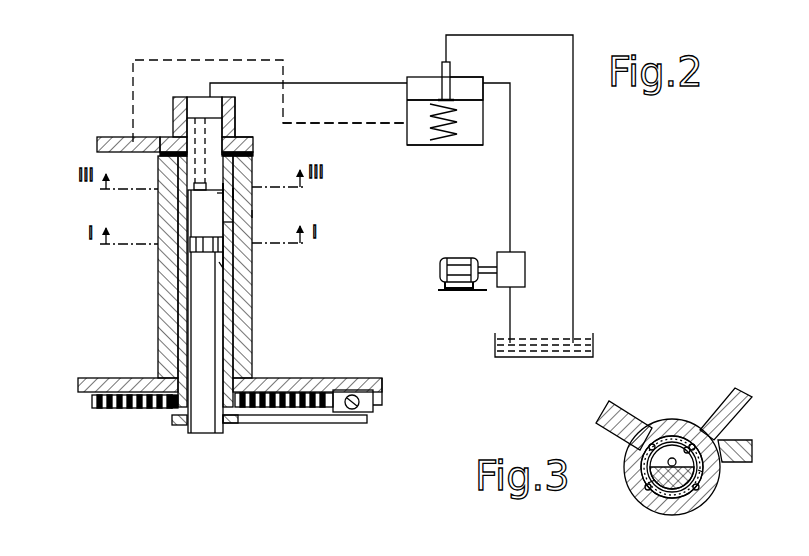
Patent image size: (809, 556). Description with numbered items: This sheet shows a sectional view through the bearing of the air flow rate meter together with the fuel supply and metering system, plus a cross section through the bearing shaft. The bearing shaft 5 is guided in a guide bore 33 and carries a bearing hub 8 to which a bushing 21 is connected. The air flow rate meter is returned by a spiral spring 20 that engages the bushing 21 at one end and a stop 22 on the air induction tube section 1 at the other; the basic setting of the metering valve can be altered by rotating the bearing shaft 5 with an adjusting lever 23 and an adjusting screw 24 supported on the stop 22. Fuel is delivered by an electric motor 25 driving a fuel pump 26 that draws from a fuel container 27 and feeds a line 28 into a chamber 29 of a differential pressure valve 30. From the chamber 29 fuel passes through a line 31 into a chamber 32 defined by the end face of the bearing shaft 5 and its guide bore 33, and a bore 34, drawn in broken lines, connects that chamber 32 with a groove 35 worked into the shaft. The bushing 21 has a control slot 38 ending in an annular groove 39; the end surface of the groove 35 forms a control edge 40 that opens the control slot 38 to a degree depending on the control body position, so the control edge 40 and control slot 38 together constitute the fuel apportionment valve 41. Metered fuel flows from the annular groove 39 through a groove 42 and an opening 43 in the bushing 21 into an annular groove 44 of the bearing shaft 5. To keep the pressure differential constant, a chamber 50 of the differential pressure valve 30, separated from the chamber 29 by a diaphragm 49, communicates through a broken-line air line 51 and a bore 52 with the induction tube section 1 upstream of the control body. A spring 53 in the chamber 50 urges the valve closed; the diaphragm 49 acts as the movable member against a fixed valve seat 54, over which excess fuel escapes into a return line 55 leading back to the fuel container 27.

In FIG. 2, the air induction tube section 1 is at (98, 390).
In FIG. 2, the bearing shaft 5 is at (209, 348).
In FIG. 3, the bearing shaft 5 is at (657, 502).
In FIG. 2, the bearing hub 8 is at (170, 338).
In FIG. 3, the bearing hub 8 is at (675, 503).
In FIG. 2, the spiral spring 20 is at (128, 408).
In FIG. 2, the bushing 21 is at (178, 273).
In FIG. 3, the bushing 21 is at (689, 444).
In FIG. 2, the stop 22 is at (380, 405).
In FIG. 2, the adjusting lever 23 is at (288, 420).
In FIG. 2, the adjusting screw 24 is at (353, 407).
In FIG. 2, the electric motor 25 is at (462, 268).
In FIG. 2, the fuel pump 26 is at (520, 270).
In FIG. 2, the fuel container 27 is at (548, 343).
In FIG. 2, the line 28 is at (510, 193).
In FIG. 2, the chamber 29 is at (475, 82).
In FIG. 2, the differential pressure valve 30 is at (399, 70).
In FIG. 2, the line 31 is at (310, 83).
In FIG. 2, the chamber 32 is at (197, 102).
In FIG. 2, the guide bore 33 is at (224, 105).
In FIG. 2, the bore 34 is at (172, 121).
In FIG. 3, the bore 34 is at (648, 422).
In FIG. 2, the groove 35 is at (197, 190).
In FIG. 3, the groove 35 is at (668, 461).
In FIG. 2, the control slot 38 is at (250, 196).
In FIG. 3, the control slot 38 is at (698, 490).
In FIG. 2, the annular groove 39 is at (233, 193).
In FIG. 3, the annular groove 39 is at (648, 483).
In FIG. 2, the control edge 40 is at (217, 195).
In FIG. 3, the control edge 40 is at (690, 447).
In FIG. 2, the fuel apportionment valve 41 is at (256, 213).
In FIG. 3, the fuel apportionment valve 41 is at (724, 438).
In FIG. 2, the groove 42 is at (232, 225).
In FIG. 3, the groove 42 is at (699, 470).
In FIG. 2, the opening 43 is at (223, 248).
In FIG. 2, the annular groove 44 is at (236, 262).
In FIG. 2, the diaphragm 49 is at (422, 103).
In FIG. 2, the chamber 50 is at (417, 134).
In FIG. 2, the air line 51 is at (302, 122).
In FIG. 2, the bore 52 is at (137, 152).
In FIG. 2, the spring 53 is at (458, 134).
In FIG. 2, the valve seat 54 is at (442, 93).
In FIG. 2, the return line 55 is at (493, 35).